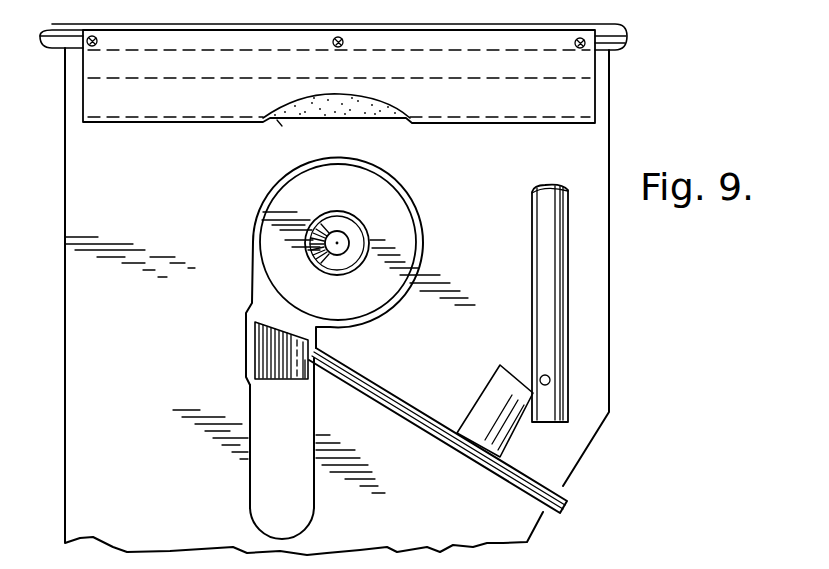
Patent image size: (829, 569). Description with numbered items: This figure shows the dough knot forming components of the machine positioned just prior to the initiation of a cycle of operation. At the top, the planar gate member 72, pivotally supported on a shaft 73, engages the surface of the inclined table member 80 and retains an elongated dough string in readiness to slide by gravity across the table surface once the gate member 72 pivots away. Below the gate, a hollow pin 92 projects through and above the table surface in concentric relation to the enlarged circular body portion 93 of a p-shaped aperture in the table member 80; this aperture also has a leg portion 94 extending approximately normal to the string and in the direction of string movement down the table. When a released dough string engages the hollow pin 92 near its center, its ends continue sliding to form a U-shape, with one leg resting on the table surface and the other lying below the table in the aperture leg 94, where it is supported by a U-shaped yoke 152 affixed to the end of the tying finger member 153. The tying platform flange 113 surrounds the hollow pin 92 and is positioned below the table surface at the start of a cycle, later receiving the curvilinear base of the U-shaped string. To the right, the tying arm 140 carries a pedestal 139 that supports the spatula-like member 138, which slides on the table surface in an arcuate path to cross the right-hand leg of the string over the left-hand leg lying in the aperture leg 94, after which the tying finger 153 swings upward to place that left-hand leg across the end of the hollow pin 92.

The shaft 73 is at (604, 33).
The gate member 72 is at (582, 68).
The table member 80 is at (593, 135).
The enlarged circular body portion 93 is at (268, 193).
The hollow pin 92 is at (366, 222).
The tying platform flange 113 is at (395, 262).
The U-shaped yoke 152 is at (272, 355).
The tying finger member 153 is at (372, 394).
The leg portion 94 is at (277, 465).
The spatula-like member 138 is at (500, 365).
The tying arm 140 is at (555, 297).
The pedestal 139 is at (551, 379).